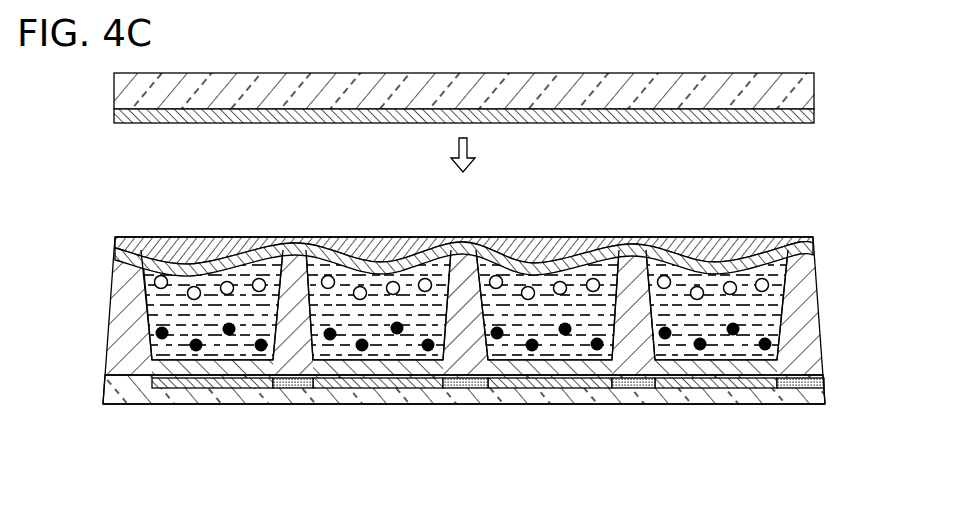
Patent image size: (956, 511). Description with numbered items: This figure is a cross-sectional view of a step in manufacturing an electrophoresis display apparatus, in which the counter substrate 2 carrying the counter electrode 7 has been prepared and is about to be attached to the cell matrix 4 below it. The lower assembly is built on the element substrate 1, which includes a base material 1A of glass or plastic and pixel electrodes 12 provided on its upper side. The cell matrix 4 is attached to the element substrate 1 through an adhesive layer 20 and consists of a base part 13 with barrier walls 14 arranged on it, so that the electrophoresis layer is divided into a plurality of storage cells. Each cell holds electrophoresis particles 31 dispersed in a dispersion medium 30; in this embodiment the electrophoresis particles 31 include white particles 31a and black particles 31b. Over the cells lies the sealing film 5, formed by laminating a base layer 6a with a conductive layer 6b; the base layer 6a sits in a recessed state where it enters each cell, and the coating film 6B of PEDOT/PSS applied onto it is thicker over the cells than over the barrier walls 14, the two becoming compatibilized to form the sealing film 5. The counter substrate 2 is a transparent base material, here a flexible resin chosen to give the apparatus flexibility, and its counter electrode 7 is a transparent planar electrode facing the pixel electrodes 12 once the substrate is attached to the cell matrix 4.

The element substrate 1 is at (450, 424).
The base material 1A is at (252, 393).
The pixel electrode 12 is at (170, 383).
The adhesive layer 20 is at (622, 387).
The base part 13 is at (522, 363).
The barrier wall 14 is at (463, 263).
The cell matrix 4 is at (450, 199).
The sealing film 5 is at (733, 188).
The base layer 6a is at (736, 262).
The conductive layer 6b is at (483, 226).
The coating film 6B is at (773, 243).
The dispersion medium 30 is at (331, 341).
The electrophoresis particles 31 is at (458, 447).
The white particles 31a is at (447, 292).
The black particles 31b is at (398, 327).
The counter substrate 2 is at (810, 90).
The counter electrode 7 is at (810, 112).